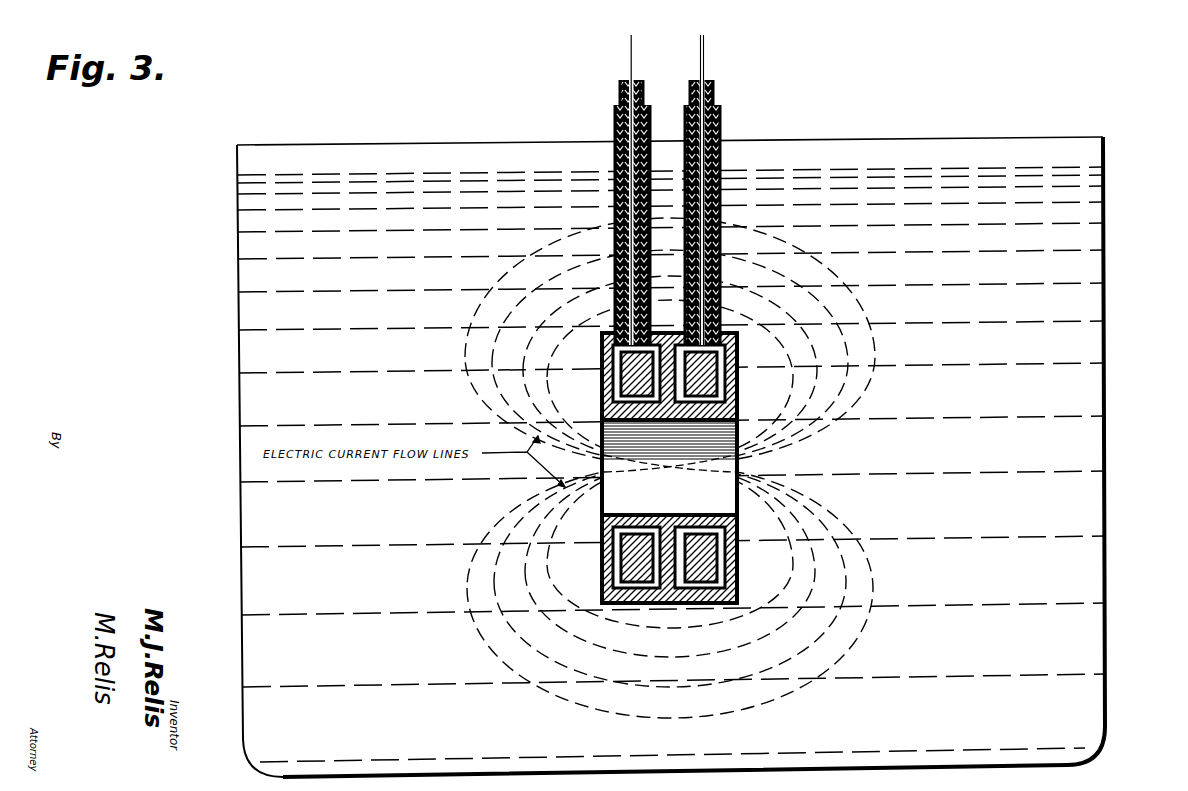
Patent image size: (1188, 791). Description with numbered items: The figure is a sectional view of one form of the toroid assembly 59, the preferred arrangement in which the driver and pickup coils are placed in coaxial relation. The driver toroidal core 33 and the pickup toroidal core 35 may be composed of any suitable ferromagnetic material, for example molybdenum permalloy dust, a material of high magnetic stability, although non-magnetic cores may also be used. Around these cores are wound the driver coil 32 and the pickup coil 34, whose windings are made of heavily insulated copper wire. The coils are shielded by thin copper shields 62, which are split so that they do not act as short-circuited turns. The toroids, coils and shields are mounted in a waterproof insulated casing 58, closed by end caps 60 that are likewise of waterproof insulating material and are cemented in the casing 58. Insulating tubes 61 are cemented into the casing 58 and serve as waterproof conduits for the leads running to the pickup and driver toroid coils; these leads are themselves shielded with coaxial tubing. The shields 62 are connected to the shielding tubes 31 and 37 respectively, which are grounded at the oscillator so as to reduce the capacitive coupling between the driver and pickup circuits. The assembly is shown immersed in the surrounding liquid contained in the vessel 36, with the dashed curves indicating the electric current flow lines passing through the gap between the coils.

The shielding tube 31 is at (628, 80).
The shielding tube 37 is at (705, 80).
The insulating tubes 61 is at (616, 130).
The copper shields 62 is at (605, 351).
The end caps 60 is at (603, 383).
The driver toroidal core 33 is at (612, 396).
The pickup toroidal core 35 is at (735, 396).
The driver coil 32 is at (605, 409).
The pickup coil 34 is at (735, 409).
The toroid assembly 59 is at (657, 502).
The casing 58 is at (681, 517).
The tank 36 is at (1106, 718).